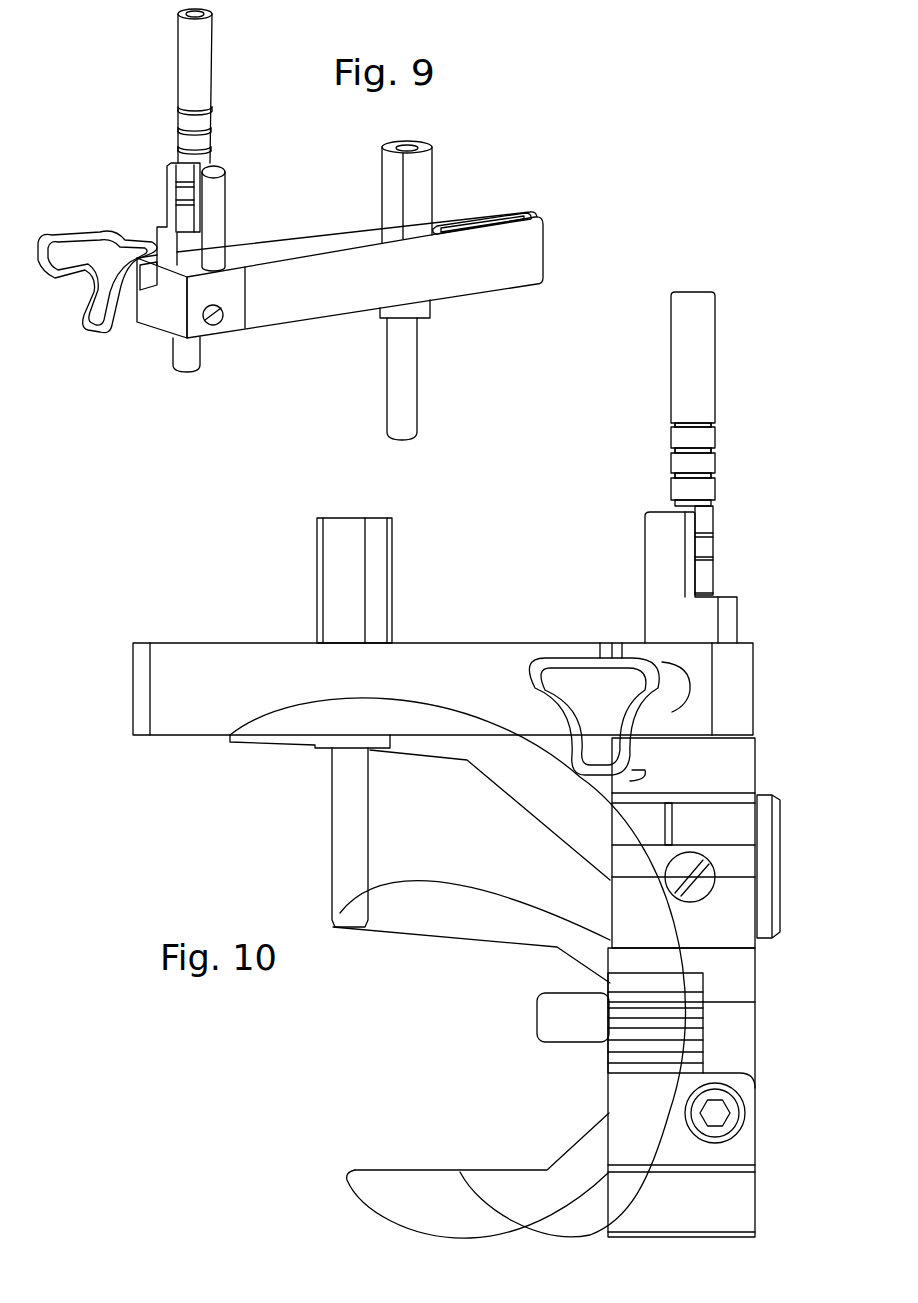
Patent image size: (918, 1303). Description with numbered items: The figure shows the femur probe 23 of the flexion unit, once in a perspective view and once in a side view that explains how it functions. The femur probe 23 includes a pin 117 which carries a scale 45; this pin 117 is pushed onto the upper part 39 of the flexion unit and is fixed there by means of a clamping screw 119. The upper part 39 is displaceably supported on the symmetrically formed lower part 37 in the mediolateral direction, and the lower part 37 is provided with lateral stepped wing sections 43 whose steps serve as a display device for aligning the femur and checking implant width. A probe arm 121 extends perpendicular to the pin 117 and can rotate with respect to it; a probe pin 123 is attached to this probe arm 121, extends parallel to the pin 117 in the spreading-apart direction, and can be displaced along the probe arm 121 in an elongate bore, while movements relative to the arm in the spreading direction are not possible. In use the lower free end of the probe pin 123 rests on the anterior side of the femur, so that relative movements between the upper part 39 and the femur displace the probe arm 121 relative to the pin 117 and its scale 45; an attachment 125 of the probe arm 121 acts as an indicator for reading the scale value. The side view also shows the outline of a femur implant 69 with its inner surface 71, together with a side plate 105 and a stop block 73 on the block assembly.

In FIG. 9, the femur probe 23 is at (505, 150).
In FIG. 10, the femur probe 23 is at (757, 413).
In FIG. 9, the pin 117 is at (206, 38).
In FIG. 10, the pin 117 is at (703, 333).
In FIG. 9, the scale 45 is at (218, 133).
In FIG. 10, the scale 45 is at (718, 479).
In FIG. 9, the attachment 125 is at (221, 208).
In FIG. 10, the attachment 125 is at (652, 534).
In FIG. 9, the clamping screw 119 is at (78, 310).
In FIG. 10, the clamping screw 119 is at (550, 676).
In FIG. 9, the probe arm 121 is at (318, 305).
In FIG. 10, the probe arm 121 is at (203, 658).
In FIG. 9, the probe pin 123 is at (406, 369).
In FIG. 10, the probe pin 123 is at (345, 814).
In FIG. 10, the femur implant 69 is at (510, 783).
In FIG. 10, the inner surface 71 is at (607, 1095).
In FIG. 10, the stop block 73 is at (553, 1018).
In FIG. 10, the side plate 105 is at (778, 800).
In FIG. 10, the upper part 39 is at (745, 903).
In FIG. 10, the stepped wing section 43 is at (705, 983).
In FIG. 10, the lower part 37 is at (740, 1152).